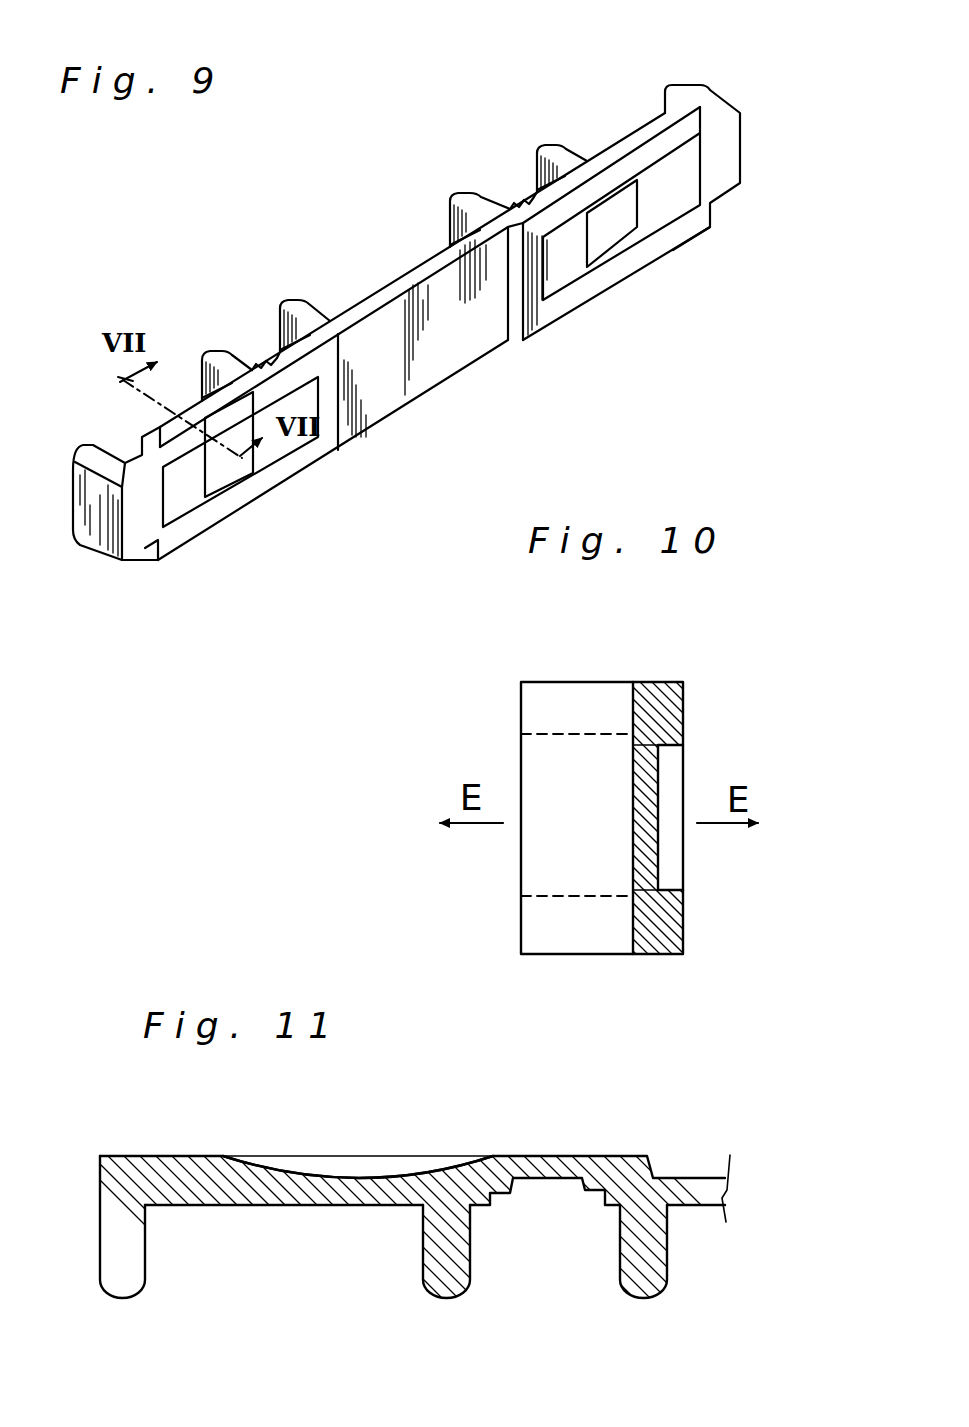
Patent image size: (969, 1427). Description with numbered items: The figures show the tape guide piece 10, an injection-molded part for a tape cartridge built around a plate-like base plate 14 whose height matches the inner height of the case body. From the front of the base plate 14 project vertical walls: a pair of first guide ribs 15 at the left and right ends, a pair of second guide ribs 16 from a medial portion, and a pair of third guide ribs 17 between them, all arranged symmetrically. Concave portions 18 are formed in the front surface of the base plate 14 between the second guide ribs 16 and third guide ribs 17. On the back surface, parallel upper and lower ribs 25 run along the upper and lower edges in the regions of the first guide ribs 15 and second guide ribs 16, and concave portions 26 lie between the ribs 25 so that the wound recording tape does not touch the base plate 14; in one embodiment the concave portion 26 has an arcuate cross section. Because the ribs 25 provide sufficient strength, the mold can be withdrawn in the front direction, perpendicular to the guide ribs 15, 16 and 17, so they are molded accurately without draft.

In FIG. 9, the tape guide piece 10 is at (372, 293).
In FIG. 10, the tape guide piece 10 is at (656, 681).
In FIG. 11, the tape guide piece 10 is at (549, 1155).
In FIG. 9, the base plate 14 is at (422, 276).
In FIG. 10, the base plate 14 is at (640, 785).
In FIG. 11, the base plate 14 is at (620, 1166).
In FIG. 9, the first guide ribs 15 is at (83, 450).
In FIG. 11, the first guide ribs 15 is at (137, 1275).
In FIG. 9, the second guide ribs 16 is at (290, 300).
In FIG. 11, the second guide ribs 16 is at (645, 1290).
In FIG. 9, the third guide ribs 17 is at (210, 352).
In FIG. 10, the third guide ribs 17 is at (575, 700).
In FIG. 11, the third guide ribs 17 is at (455, 1283).
In FIG. 9, the concave portions 18 is at (257, 366).
In FIG. 11, the concave portions 18 is at (553, 1180).
In FIG. 9, the upper and lower ribs 25 is at (178, 443).
In FIG. 10, the upper and lower ribs 25 is at (677, 698).
In FIG. 11, the upper and lower ribs 25 is at (355, 1172).
In FIG. 9, the concave portions 26 is at (232, 452).
In FIG. 10, the concave portions 26 is at (667, 867).
In FIG. 11, the concave portions 26 is at (400, 1178).